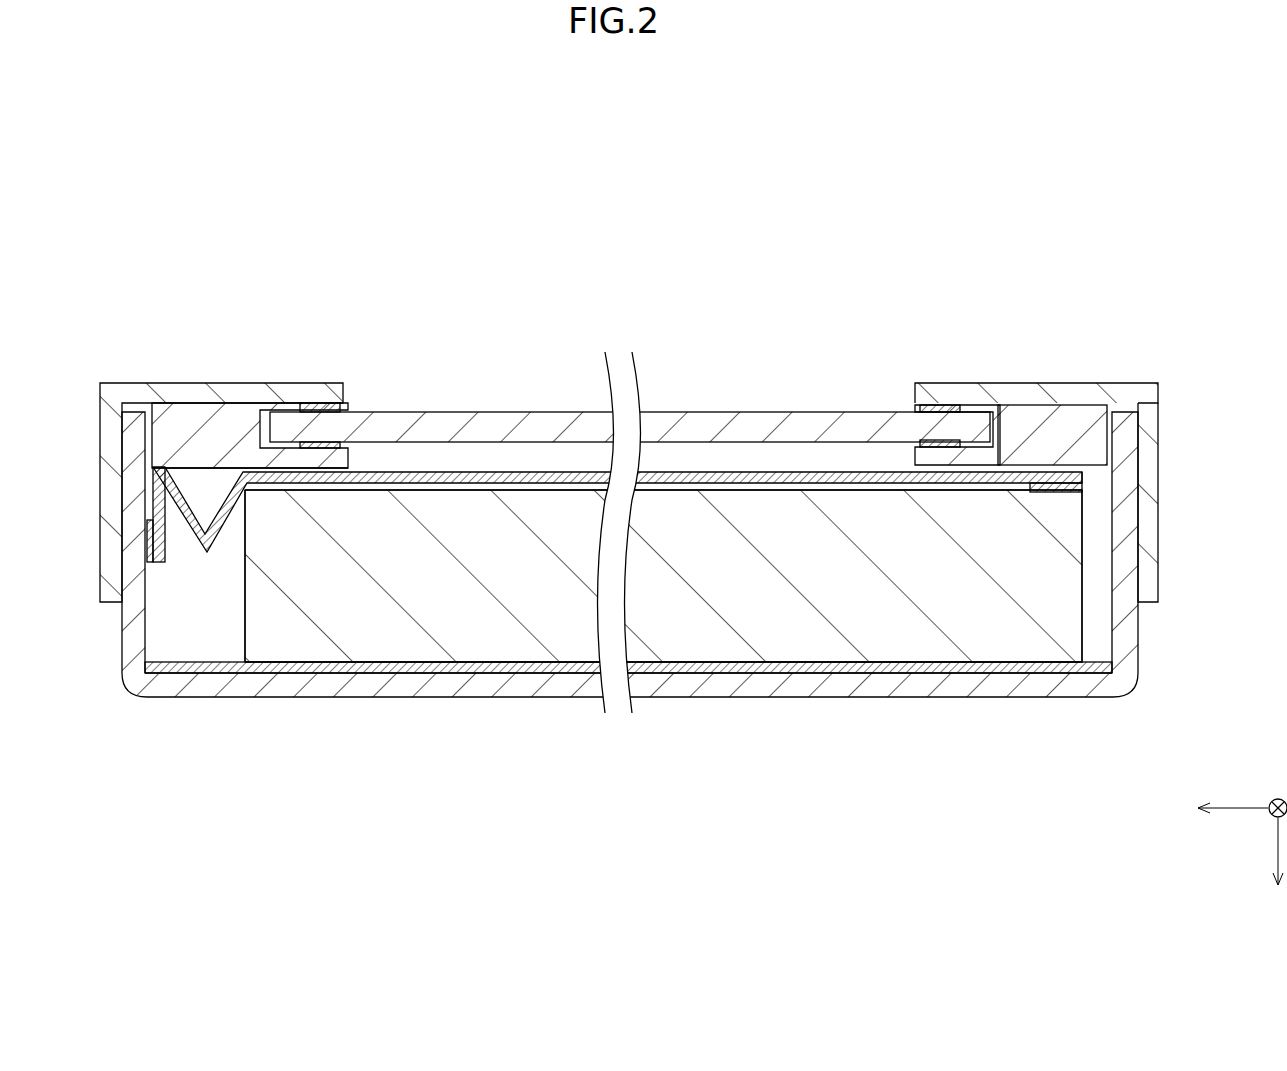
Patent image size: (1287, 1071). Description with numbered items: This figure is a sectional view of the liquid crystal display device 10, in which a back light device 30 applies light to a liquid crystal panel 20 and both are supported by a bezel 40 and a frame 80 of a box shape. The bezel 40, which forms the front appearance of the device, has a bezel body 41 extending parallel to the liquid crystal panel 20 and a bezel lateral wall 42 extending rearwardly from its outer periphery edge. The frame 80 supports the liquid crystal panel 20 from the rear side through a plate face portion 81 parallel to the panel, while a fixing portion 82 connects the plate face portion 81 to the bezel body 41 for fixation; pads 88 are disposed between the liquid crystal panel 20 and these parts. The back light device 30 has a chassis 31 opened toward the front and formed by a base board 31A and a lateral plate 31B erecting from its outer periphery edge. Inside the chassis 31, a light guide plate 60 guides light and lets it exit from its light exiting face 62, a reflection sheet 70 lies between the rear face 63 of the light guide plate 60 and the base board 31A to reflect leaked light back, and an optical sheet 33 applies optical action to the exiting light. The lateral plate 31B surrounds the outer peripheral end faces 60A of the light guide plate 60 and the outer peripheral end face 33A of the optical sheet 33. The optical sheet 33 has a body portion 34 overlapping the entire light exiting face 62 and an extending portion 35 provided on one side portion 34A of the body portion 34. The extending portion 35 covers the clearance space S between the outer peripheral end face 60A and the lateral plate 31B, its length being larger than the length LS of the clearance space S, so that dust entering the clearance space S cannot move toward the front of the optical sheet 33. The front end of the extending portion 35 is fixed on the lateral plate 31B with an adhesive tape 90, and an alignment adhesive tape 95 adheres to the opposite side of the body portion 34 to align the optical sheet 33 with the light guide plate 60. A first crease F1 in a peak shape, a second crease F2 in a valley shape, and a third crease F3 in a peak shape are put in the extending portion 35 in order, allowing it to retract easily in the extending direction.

The liquid crystal display device 10 is at (783, 190).
The liquid crystal panel 20 is at (700, 420).
The back light device 30 is at (582, 606).
The chassis 31 is at (577, 694).
The base board 31A is at (517, 694).
The lateral plate 31B is at (128, 633).
The optical sheet 33 is at (688, 443).
The outer peripheral end face 33A is at (1082, 478).
The body portion 34 is at (469, 399).
The side portion 34A is at (232, 465).
The extending portion 35 is at (152, 484).
The bezel 40 is at (665, 454).
The bezel body 41 is at (1085, 392).
The bezel lateral wall 42 is at (1150, 545).
The light guide plate 60 is at (727, 621).
The outer peripheral end face 60A is at (240, 623).
The light exiting face 62 is at (780, 491).
The rear face 63 is at (802, 664).
The reflection sheet 70 is at (938, 668).
The frame 80 is at (1032, 393).
The plate face portion 81 is at (990, 450).
The fixing portion 82 is at (1045, 410).
The pads 88 is at (338, 408).
The adhesive tape 90 is at (148, 538).
The alignment adhesive tape 95 is at (1082, 488).
The first crease F1 is at (240, 470).
The second crease F2 is at (205, 548).
The third crease F3 is at (155, 468).
The clearance space S is at (205, 619).
The length of clearance space LS is at (145, 700).